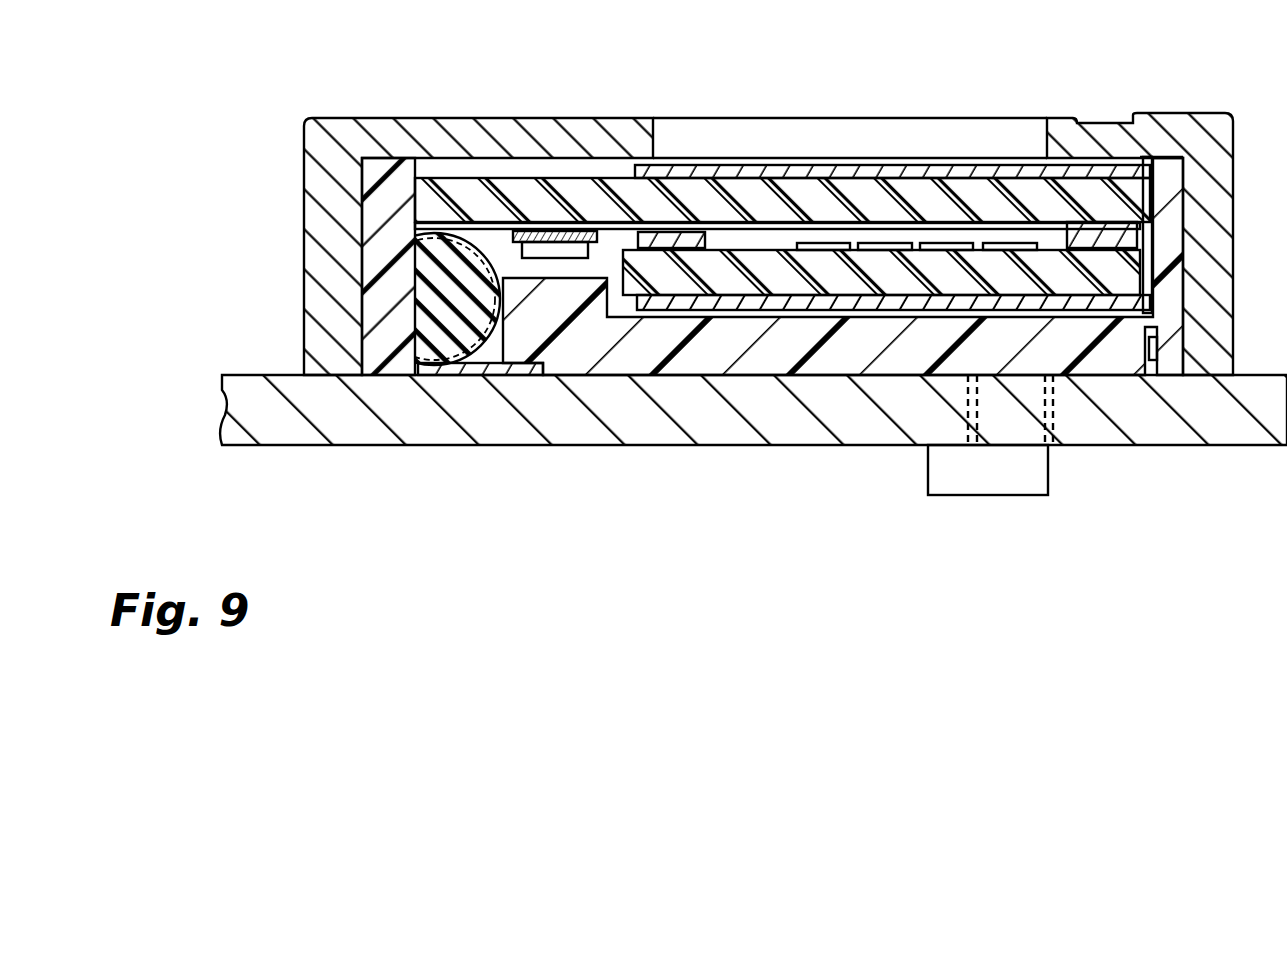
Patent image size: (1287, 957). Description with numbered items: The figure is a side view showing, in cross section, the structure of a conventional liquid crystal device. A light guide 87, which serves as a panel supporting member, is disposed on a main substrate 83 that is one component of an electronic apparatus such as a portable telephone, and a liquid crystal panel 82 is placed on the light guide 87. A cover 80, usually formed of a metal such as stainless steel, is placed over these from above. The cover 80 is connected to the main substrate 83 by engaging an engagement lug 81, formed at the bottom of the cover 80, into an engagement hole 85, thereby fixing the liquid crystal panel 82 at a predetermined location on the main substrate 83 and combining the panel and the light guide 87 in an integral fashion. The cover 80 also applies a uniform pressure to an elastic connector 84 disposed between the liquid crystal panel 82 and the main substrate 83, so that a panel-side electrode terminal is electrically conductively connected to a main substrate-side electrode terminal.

The cover 80 is at (538, 132).
The engagement lug 81 is at (997, 482).
The liquid crystal panel 82 is at (897, 150).
The main substrate 83 is at (488, 420).
The elastic connector 84 is at (440, 307).
The engagement hole 85 is at (1053, 412).
The light guide 87 is at (700, 365).